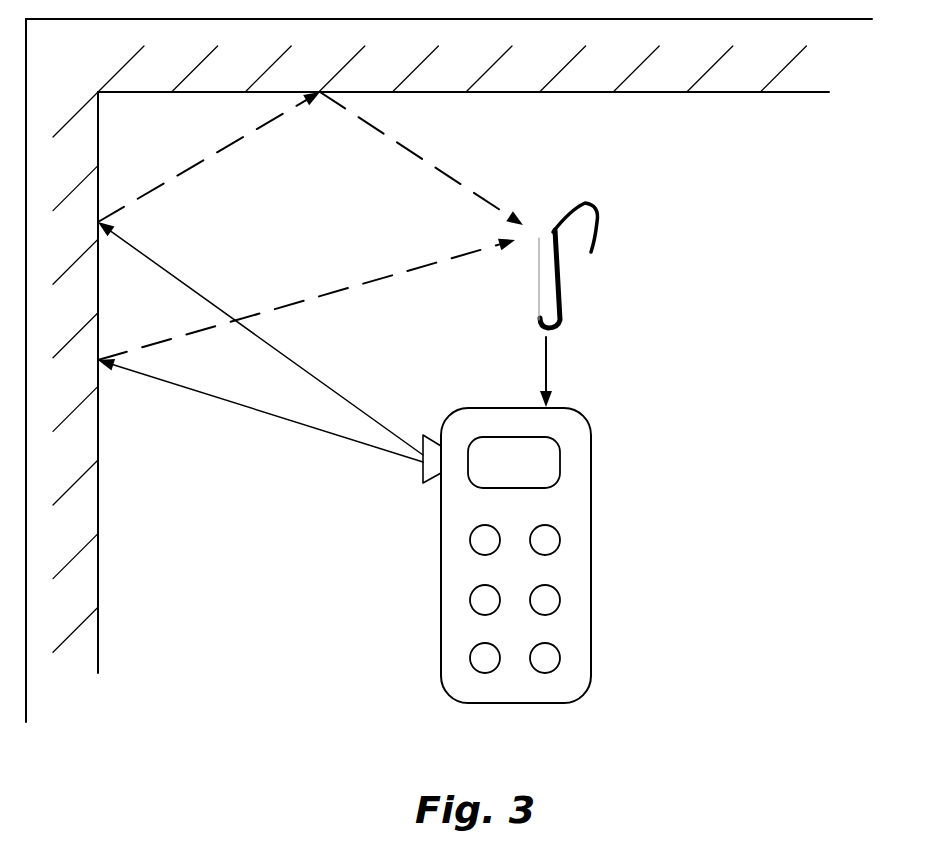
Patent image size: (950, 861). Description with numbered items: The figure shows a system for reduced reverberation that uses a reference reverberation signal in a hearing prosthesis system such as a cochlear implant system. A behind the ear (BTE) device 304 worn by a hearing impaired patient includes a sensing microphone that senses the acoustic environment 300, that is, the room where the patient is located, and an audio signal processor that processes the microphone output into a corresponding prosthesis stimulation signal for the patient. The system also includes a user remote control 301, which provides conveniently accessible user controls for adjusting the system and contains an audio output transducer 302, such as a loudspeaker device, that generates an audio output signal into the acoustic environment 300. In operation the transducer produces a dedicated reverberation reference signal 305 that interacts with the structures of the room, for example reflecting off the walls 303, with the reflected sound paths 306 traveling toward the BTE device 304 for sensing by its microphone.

The acoustic environment 300 is at (778, 592).
The user remote control 301 is at (441, 612).
The audio output transducer 302 is at (423, 482).
The walls 303 is at (98, 512).
The behind the ear (BTE) device 304 is at (565, 288).
The dedicated reverberation reference signal 305 is at (313, 378).
The reflected sound path to ear 306 is at (447, 178).